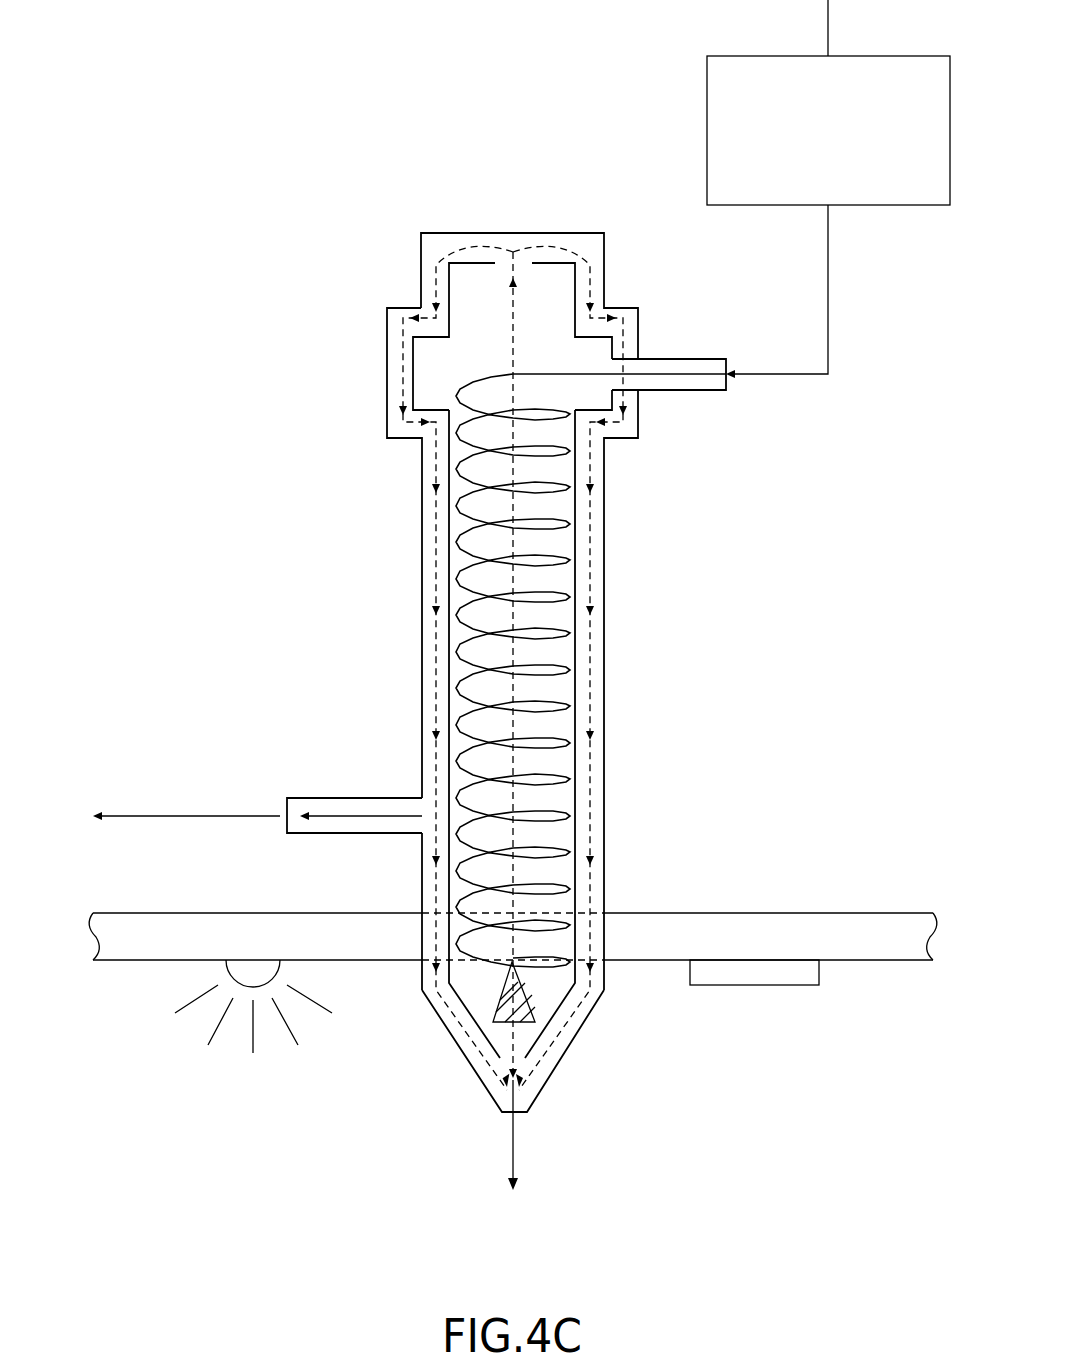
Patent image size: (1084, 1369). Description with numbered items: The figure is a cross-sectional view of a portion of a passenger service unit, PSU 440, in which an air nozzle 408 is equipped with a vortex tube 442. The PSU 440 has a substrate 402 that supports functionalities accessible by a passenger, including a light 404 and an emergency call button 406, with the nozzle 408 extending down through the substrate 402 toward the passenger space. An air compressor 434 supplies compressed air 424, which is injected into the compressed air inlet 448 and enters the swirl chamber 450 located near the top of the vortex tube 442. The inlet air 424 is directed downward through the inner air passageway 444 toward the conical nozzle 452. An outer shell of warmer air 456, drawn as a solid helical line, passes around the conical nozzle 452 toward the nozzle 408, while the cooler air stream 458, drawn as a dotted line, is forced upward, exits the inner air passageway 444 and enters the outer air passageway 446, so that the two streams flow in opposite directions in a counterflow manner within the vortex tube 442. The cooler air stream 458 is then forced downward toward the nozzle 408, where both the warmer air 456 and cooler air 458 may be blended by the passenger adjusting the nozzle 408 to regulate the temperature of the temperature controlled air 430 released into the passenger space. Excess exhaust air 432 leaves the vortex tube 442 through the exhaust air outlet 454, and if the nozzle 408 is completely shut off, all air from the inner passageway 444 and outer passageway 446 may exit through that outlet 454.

The PSU 440 is at (294, 128).
The air compressor 434 is at (753, 87).
The compressed air 424 is at (828, 280).
The compressed air inlet 448 is at (700, 358).
The swirl chamber 450 is at (435, 378).
The vortex tube 442 is at (604, 485).
The inner air passageway 444 is at (563, 695).
The outer air passageway 446 is at (594, 540).
The warmer air stream 456 is at (540, 777).
The cooler air stream 458 is at (432, 516).
The temperature controlled air 430 is at (513, 1130).
The conical nozzle 452 is at (512, 1005).
The air nozzle 408 is at (567, 1050).
The exhaust air outlet 454 is at (355, 797).
The exhaust air 432 is at (193, 815).
The substrate 402 is at (140, 912).
The light 404 is at (220, 972).
The emergency call button 406 is at (750, 985).